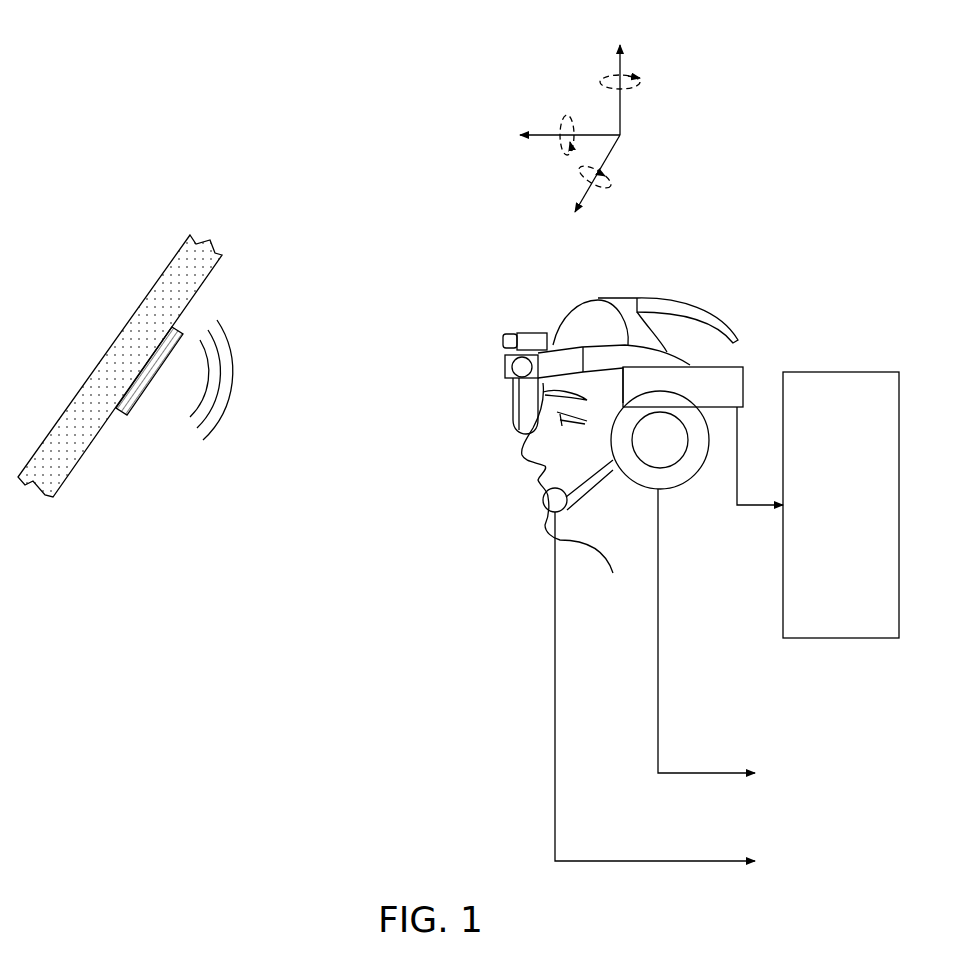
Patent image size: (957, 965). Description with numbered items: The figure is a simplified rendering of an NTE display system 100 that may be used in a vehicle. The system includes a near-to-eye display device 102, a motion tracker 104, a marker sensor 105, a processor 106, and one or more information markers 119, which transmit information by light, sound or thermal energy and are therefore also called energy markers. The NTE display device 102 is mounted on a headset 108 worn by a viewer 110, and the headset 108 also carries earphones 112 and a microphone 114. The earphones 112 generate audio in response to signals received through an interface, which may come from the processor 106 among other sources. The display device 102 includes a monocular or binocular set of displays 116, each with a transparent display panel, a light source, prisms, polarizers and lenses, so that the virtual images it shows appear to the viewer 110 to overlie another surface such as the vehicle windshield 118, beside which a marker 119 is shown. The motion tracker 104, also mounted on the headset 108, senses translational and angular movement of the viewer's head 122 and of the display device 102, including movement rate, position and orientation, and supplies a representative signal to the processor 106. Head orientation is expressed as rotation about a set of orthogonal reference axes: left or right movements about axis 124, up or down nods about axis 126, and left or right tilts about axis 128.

The NTE display system 100 is at (388, 98).
The near-to-eye display device 102 is at (455, 345).
The motion tracker 104 is at (528, 320).
The marker sensor 105 is at (495, 335).
The processor 106 is at (840, 372).
The headset 108 is at (707, 303).
The viewer 110 is at (508, 493).
The earphones 112 is at (665, 458).
The microphone 114 is at (548, 513).
The displays 116 is at (515, 408).
The vehicle windshield 118 is at (158, 275).
The information markers 119 is at (145, 404).
The viewer's head 122 is at (580, 312).
The axis 124 is at (620, 127).
The axis 126 is at (613, 187).
The axis 128 is at (572, 118).